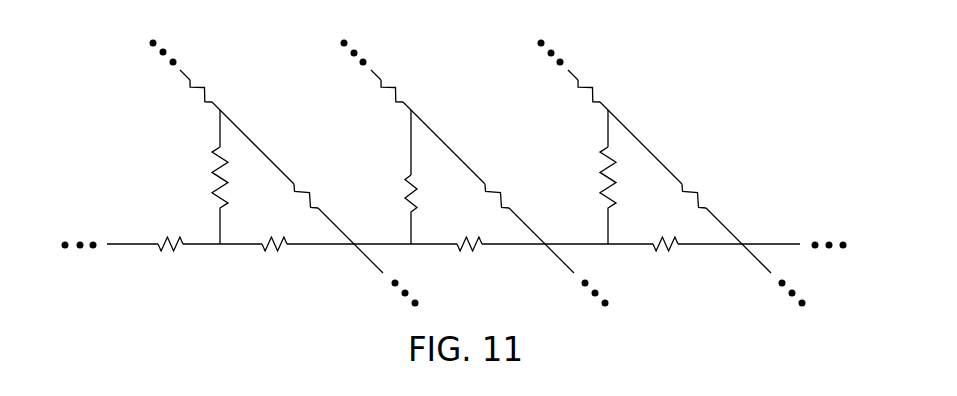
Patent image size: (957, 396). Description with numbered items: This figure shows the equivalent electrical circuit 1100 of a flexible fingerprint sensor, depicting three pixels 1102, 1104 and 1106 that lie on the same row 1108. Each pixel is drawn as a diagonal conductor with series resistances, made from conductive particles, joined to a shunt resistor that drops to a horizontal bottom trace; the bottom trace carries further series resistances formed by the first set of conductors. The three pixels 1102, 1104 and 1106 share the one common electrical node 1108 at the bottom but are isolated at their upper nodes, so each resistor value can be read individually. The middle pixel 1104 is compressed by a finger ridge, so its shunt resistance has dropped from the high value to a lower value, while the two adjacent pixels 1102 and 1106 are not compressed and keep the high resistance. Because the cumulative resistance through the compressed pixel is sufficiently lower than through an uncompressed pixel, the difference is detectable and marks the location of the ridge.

The electrical circuit 1100 is at (740, 49).
The first pixel 1102 is at (253, 139).
The middle pixel 1104 is at (442, 139).
The third pixel 1106 is at (639, 139).
The row 1108 is at (118, 244).